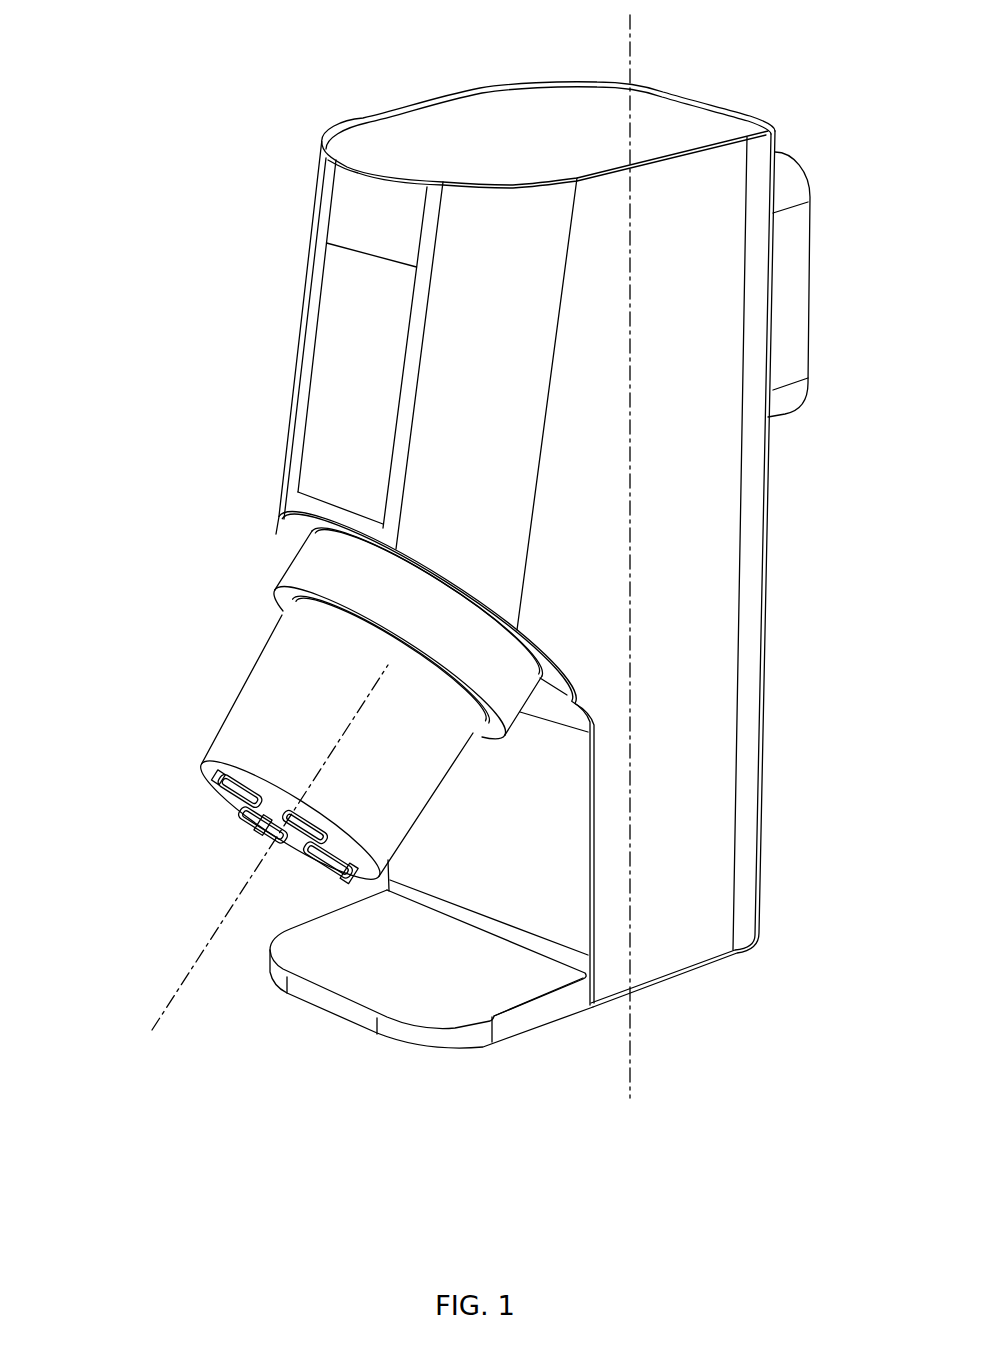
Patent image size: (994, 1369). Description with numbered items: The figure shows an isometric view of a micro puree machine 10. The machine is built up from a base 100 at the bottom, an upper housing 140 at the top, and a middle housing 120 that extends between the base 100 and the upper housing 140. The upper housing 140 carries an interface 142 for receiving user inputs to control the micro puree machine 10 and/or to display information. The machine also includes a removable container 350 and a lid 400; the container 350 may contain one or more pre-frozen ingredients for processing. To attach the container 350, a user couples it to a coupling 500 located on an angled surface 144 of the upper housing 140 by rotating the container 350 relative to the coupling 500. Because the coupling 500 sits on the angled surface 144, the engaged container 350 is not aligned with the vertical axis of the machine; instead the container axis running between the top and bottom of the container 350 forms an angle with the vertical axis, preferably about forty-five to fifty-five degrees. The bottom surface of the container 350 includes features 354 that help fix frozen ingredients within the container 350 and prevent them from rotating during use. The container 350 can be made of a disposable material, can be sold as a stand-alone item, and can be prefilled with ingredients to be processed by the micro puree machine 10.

The micro puree machine 10 is at (124, 170).
The base 100 is at (350, 990).
The middle housing 120 is at (695, 758).
The upper housing 140 is at (730, 297).
The interface 142 is at (318, 413).
The angled surface 144 is at (290, 530).
The removable container 350 is at (283, 676).
The features 354 is at (203, 767).
The lid 400 is at (300, 604).
The coupling 500 is at (293, 577).